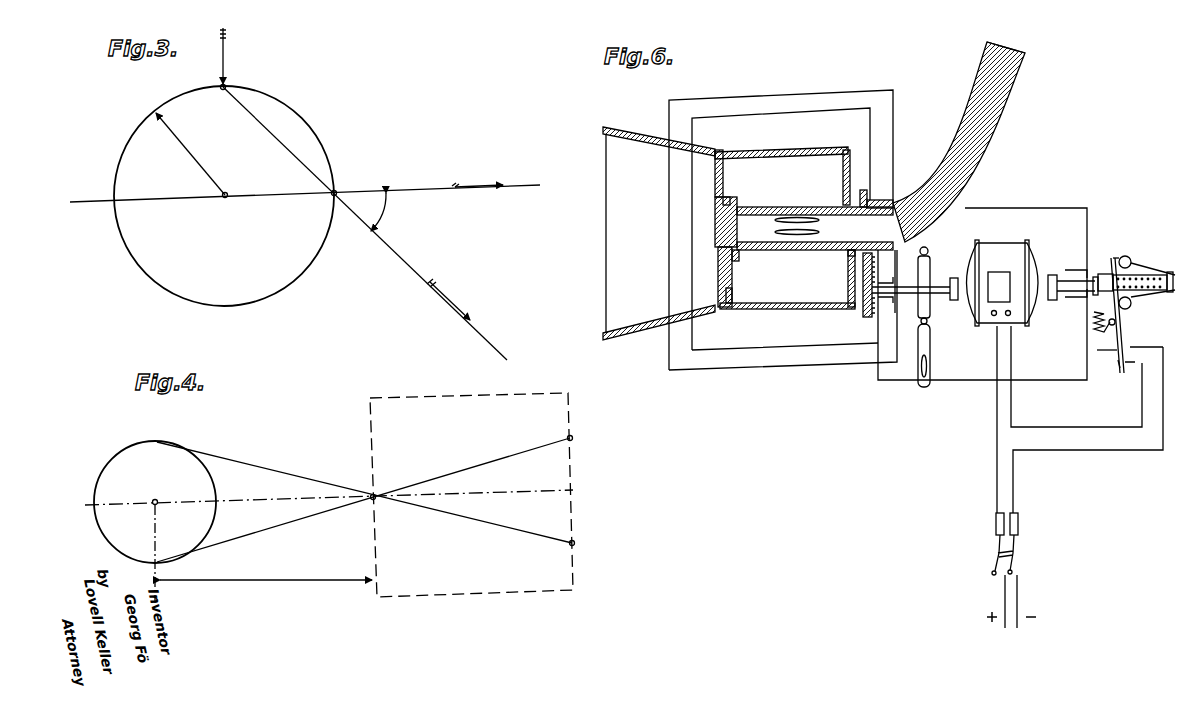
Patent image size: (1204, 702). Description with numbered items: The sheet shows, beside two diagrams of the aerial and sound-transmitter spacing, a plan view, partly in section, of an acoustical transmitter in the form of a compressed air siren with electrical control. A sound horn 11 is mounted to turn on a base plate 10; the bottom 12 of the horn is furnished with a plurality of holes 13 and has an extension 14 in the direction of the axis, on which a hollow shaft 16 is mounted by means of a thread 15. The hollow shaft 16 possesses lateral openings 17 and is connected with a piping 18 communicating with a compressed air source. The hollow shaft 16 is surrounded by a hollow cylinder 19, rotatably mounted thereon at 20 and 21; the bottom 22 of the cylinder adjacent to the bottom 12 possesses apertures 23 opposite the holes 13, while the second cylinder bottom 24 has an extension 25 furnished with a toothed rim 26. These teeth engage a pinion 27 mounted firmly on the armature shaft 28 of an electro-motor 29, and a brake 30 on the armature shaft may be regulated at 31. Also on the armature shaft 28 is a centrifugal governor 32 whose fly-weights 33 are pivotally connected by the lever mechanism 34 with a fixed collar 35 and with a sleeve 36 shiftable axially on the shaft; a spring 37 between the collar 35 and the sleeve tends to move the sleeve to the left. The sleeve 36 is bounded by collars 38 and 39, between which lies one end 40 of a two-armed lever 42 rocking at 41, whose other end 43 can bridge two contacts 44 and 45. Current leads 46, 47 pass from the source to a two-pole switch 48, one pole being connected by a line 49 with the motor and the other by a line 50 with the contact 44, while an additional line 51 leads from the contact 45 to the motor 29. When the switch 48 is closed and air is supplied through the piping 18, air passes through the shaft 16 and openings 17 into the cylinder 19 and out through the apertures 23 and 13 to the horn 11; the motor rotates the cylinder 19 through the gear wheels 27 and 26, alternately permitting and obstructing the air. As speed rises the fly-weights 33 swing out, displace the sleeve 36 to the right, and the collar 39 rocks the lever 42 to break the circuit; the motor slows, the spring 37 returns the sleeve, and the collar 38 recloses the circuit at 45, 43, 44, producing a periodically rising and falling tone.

The base plate 10 is at (845, 110).
The sound horn 11 is at (607, 162).
The bottom of the sound horn 12 is at (713, 162).
The holes 13 is at (718, 185).
The extension 14 is at (740, 232).
The thread 15 is at (718, 250).
The hollow shaft 16 is at (775, 212).
The lateral openings 17 is at (816, 212).
The piping 18 is at (966, 106).
The hollow cylinder 19 is at (780, 309).
The mounting 20 is at (741, 257).
The mounting 21 is at (845, 258).
The bottom of the cylinder 22 is at (742, 297).
The apertures 23 is at (742, 162).
The second cylinder bottom 24 is at (852, 167).
The extension 25 is at (866, 192).
The toothed rim 26 is at (878, 205).
The pinion 27 is at (866, 305).
The armature shaft 28 is at (915, 298).
The electro-motor 29 is at (1005, 252).
The brake 30 is at (930, 308).
The brake regulation 31 is at (932, 364).
The centrifugal governor 32 is at (1145, 275).
The fly-weights 33 is at (1131, 260).
The lever mechanism 34 is at (1160, 260).
The fixed collar 35 is at (1150, 296).
The sleeve 36 is at (1110, 272).
The spring 37 is at (1131, 305).
The collar 38 is at (1118, 257).
The collar 39 is at (1097, 276).
The end of two-armed lever 40 is at (1095, 295).
The fulcrum 41 is at (1100, 330).
The two-armed lever 42 is at (1110, 350).
The end of two-armed lever 43 is at (1115, 365).
The contact 44 is at (1124, 346).
The contact 45 is at (1134, 366).
The current lead 46 is at (1002, 598).
The current lead 47 is at (1020, 597).
The two-pole switch 48 is at (998, 554).
The line 49 is at (978, 419).
The line 50 is at (1122, 452).
The line 51 is at (1010, 317).